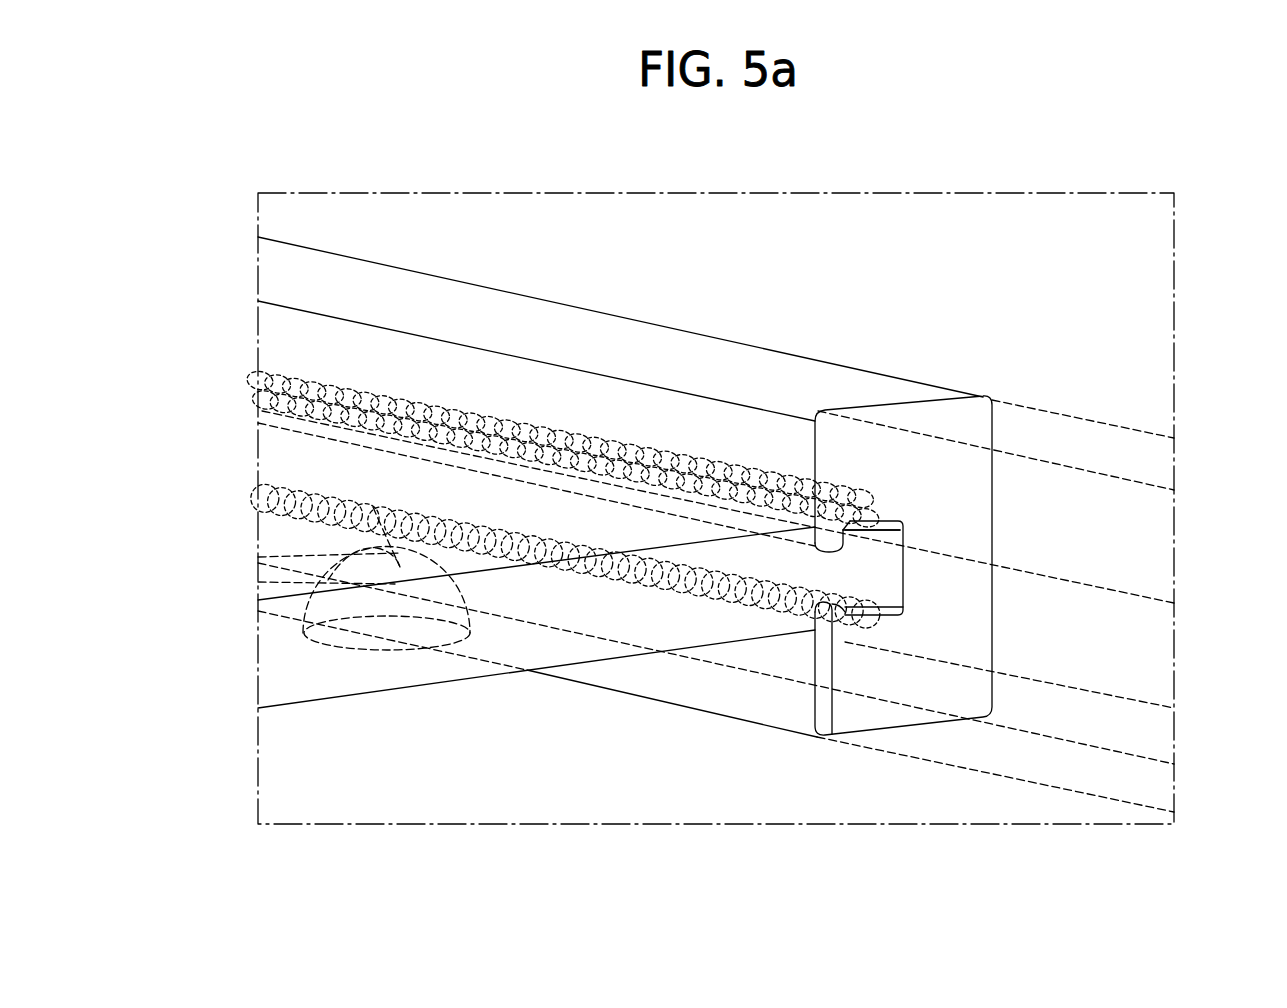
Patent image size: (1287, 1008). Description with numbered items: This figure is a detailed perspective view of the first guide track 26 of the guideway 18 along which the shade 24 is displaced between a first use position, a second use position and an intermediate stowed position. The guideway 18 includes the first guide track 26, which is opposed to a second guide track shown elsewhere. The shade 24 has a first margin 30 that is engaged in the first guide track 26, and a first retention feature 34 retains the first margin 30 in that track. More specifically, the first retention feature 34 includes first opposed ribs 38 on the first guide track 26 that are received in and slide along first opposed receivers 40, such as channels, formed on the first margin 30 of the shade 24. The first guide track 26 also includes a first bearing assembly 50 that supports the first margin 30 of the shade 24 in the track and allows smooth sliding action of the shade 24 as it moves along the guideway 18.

The guideway 18 is at (805, 338).
The shade 24 is at (502, 645).
The first guide track 26 is at (886, 519).
The first margin 30 is at (878, 573).
The first retention feature 34 is at (848, 706).
The first opposed ribs 38 is at (815, 543).
The first opposed receivers 40 is at (832, 550).
The first bearing assembly 50 is at (307, 407).